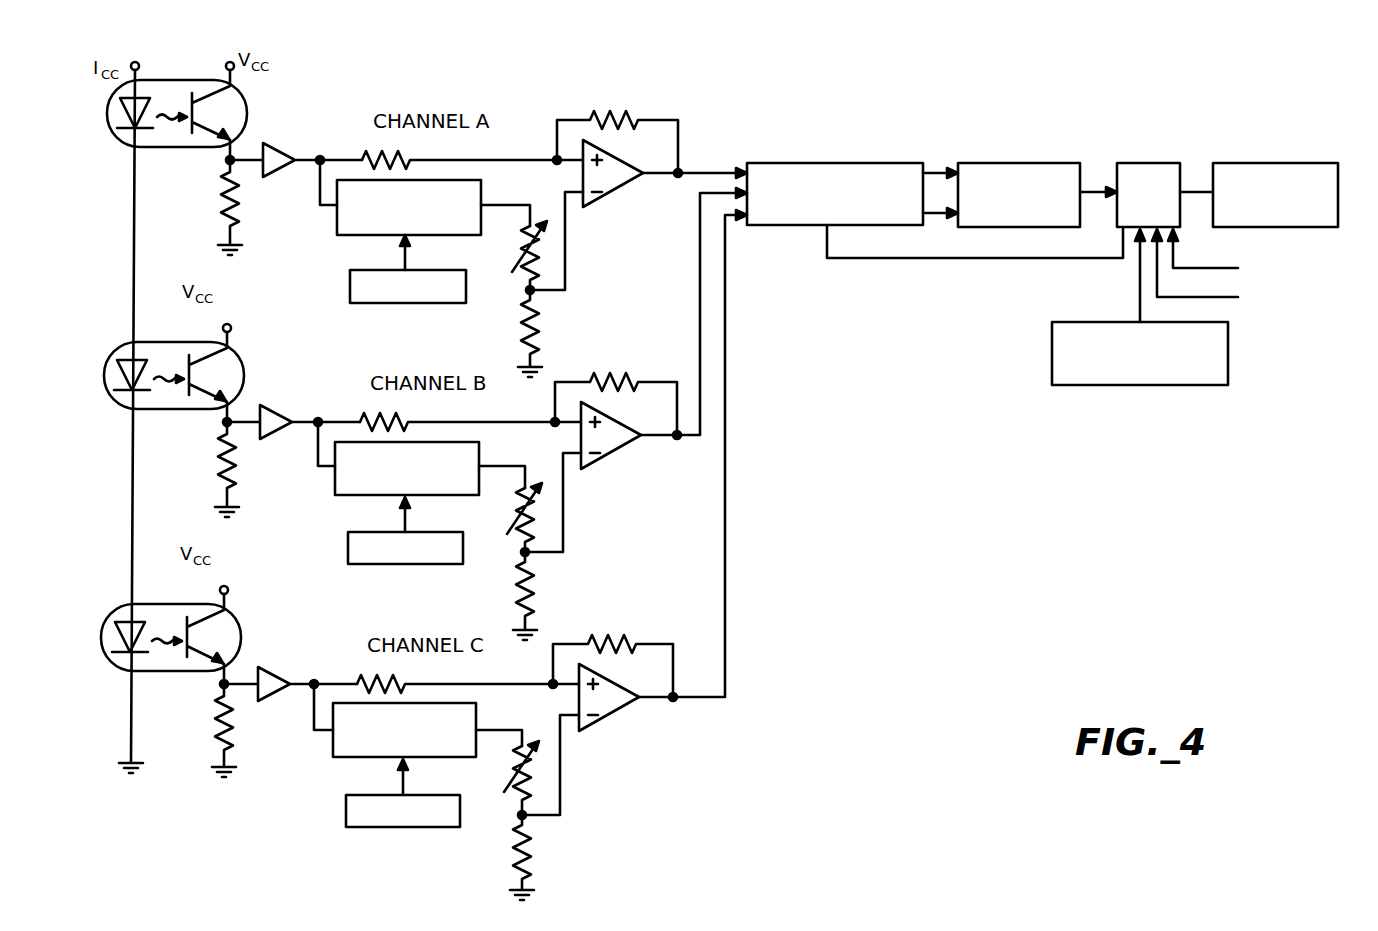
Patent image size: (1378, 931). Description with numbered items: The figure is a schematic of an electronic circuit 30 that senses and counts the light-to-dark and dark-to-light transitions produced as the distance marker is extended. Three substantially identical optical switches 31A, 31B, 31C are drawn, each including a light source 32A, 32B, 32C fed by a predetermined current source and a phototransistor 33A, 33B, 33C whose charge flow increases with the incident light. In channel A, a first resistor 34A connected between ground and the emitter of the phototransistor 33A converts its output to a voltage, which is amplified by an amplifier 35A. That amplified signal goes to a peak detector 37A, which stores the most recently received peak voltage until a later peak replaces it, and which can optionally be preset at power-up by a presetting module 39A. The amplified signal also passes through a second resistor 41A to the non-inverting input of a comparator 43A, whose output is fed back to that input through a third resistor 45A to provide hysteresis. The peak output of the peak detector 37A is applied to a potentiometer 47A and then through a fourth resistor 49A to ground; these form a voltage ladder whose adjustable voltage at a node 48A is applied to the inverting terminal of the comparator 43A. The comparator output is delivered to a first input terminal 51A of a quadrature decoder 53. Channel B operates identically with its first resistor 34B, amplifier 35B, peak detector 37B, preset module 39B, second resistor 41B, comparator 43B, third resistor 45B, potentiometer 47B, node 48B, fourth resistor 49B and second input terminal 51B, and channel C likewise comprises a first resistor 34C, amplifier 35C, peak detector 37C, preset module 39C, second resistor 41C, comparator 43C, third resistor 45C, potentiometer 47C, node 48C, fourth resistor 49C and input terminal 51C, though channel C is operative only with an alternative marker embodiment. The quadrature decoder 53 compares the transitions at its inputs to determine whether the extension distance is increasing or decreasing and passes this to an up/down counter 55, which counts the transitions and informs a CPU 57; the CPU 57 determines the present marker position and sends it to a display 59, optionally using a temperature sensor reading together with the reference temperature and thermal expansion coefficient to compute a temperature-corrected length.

The electronic circuit 30 is at (756, 127).
The first optical switch 31A is at (148, 82).
The second optical switch 31B is at (145, 344).
The third optical switch 31C is at (142, 606).
The light source 32A is at (139, 132).
The light source 32B is at (136, 394).
The light source 32C is at (134, 656).
The phototransistor 33A is at (238, 95).
The phototransistor 33B is at (235, 357).
The phototransistor 33C is at (232, 619).
The first resistor 34A is at (220, 192).
The first resistor 34B is at (217, 454).
The first resistor 34C is at (214, 716).
The amplifier 35A is at (285, 146).
The amplifier 35B is at (282, 408).
The amplifier 35C is at (279, 670).
The peak detector 37A is at (348, 237).
The peak detector 37B is at (346, 497).
The peak detector 37C is at (344, 759).
The presetting module 39A is at (358, 305).
The preset module 39B is at (356, 566).
The preset module 39C is at (354, 829).
The second resistor 41A is at (398, 158).
The second resistor 41B is at (396, 420).
The second resistor 41C is at (393, 682).
The comparator 43A is at (596, 210).
The comparator 43B is at (594, 472).
The comparator 43C is at (592, 734).
The third resistor 45A is at (620, 115).
The third resistor 45B is at (618, 377).
The third resistor 45C is at (616, 639).
The potentiometer 47A is at (522, 244).
The potentiometer 47B is at (518, 506).
The potentiometer 47C is at (515, 768).
The node 48A is at (520, 297).
The node 48B is at (517, 559).
The node 48C is at (514, 821).
The fourth resistor 49A is at (518, 333).
The fourth resistor 49B is at (515, 595).
The fourth resistor 49C is at (512, 857).
The first input terminal 51A is at (740, 157).
The second input terminal 51B is at (742, 192).
The input terminal 51C is at (745, 227).
The quadrature decoder 53 is at (885, 163).
The up/down counter 55 is at (1048, 163).
The central processing unit 57 is at (1165, 163).
The display 59 is at (1288, 163).